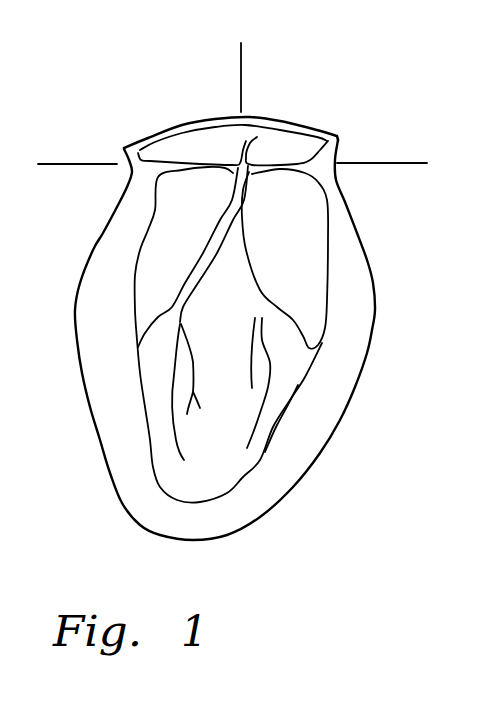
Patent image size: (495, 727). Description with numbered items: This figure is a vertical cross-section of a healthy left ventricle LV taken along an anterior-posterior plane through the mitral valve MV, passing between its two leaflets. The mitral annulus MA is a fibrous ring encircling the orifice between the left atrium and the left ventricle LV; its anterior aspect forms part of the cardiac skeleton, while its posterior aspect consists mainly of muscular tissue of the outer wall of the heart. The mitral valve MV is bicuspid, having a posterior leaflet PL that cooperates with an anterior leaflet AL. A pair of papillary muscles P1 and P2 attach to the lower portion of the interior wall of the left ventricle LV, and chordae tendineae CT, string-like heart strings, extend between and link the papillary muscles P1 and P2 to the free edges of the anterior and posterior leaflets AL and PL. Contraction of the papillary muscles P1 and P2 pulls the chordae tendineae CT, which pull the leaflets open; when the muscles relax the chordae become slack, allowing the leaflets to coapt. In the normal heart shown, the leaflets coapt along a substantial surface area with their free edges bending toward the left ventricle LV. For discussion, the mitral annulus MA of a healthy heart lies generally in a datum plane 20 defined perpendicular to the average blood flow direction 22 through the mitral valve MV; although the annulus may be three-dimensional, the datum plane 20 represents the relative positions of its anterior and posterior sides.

The datum plane 20 is at (383, 163).
The average blood flow direction 22 is at (242, 62).
The mitral valve MV is at (263, 116).
The mitral annulus MA is at (138, 170).
The anterior leaflet AL is at (204, 157).
The posterior leaflet PL is at (292, 161).
The chordae tendineae CT is at (213, 230).
The left ventricle LV is at (241, 326).
The papillary muscle P1 is at (150, 400).
The papillary muscle P2 is at (276, 353).